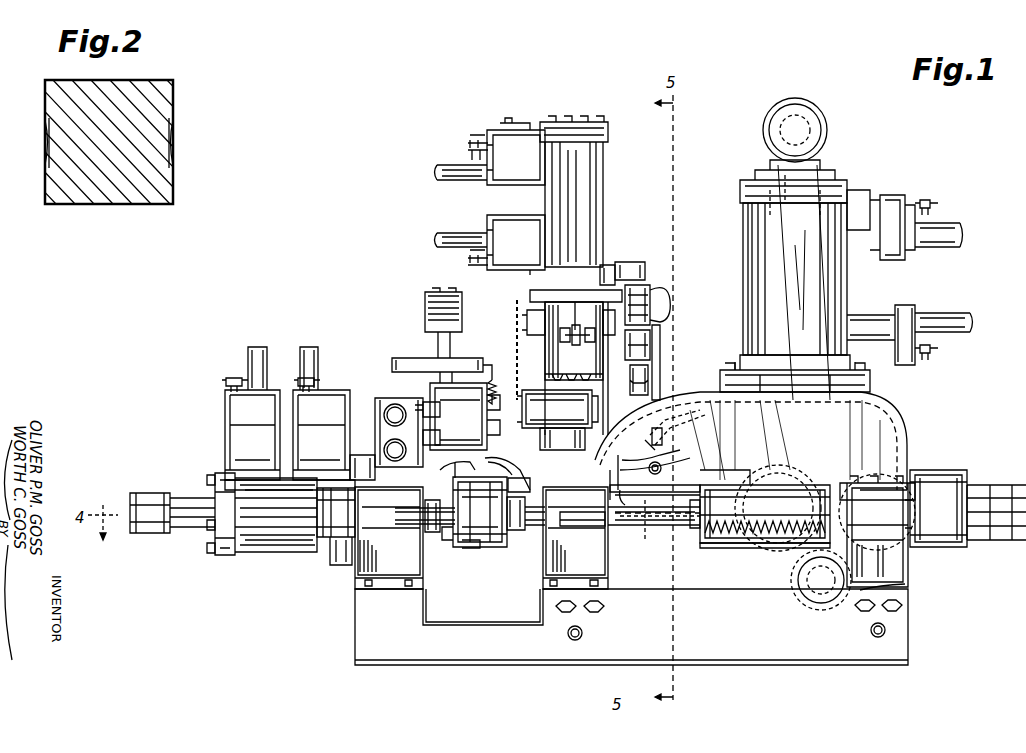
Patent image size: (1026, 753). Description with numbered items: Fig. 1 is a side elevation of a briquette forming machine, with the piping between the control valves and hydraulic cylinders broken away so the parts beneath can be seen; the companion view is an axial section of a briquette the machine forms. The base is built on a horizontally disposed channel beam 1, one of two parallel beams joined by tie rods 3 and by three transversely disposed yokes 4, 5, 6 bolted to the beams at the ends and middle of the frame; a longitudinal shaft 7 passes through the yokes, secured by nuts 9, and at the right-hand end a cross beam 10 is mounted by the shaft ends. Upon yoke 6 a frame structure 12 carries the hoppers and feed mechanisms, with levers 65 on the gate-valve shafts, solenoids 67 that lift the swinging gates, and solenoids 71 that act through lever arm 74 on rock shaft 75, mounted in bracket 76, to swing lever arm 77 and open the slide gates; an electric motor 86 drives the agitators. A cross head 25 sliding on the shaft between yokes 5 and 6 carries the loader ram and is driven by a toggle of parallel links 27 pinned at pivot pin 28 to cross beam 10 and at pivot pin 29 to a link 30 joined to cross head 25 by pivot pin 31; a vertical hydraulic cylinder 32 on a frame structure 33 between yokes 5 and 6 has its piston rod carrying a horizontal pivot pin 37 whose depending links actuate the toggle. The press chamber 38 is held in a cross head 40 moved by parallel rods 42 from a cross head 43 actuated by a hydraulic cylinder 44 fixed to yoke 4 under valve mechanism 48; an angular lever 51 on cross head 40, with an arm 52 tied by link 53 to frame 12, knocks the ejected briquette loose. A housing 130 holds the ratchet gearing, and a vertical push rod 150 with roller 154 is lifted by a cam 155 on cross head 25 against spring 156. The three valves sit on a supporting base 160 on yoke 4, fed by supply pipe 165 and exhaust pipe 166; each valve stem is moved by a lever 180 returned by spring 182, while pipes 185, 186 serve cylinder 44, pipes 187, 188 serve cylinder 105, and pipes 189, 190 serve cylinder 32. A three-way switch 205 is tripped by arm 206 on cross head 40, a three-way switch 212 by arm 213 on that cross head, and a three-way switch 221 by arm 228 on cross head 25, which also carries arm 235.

The channel beam 1 is at (372, 624).
The tie rods 3 is at (575, 641).
The yoke 4 is at (358, 556).
The yoke 5 is at (892, 552).
The yoke 6 is at (560, 574).
The shaft 7 is at (618, 530).
The nuts 9 is at (332, 520).
The cross beam 10 is at (958, 470).
The frame structure 12 is at (558, 354).
The cross head 25 is at (722, 543).
The links 27 is at (908, 586).
The pivot pin 28 is at (925, 513).
The pivot pin 29 is at (805, 608).
The link 30 is at (775, 548).
The pivot pin 31 is at (750, 540).
The hydraulic cylinder 32 is at (748, 233).
The frame structure 33 is at (875, 412).
The horizontal pivot pin 37 is at (810, 128).
The press chamber 38 is at (810, 273).
The cross head 40 is at (472, 548).
The parallel rods 42 is at (290, 512).
The cross head 43 is at (156, 496).
The hydraulic cylinder 44 is at (268, 542).
The valve mechanism 48 is at (465, 416).
The angular lever 51 is at (425, 300).
The arm 52 is at (480, 468).
The link 53 is at (500, 462).
The levers 65 is at (645, 388).
The solenoids 67 is at (652, 346).
The solenoids 71 is at (665, 297).
The lever arm 74 is at (630, 262).
The rock shaft 75 is at (598, 246).
The bracket 76 is at (645, 275).
The lever arm 77 is at (538, 297).
The electric motor 86 is at (557, 420).
The cylinder 105 is at (600, 163).
The housing 130 is at (663, 313).
The vertical push rod 150 is at (662, 368).
The roller 154 is at (672, 455).
The cam 155 is at (655, 483).
The spring 156 is at (690, 414).
The supporting base 160 is at (360, 455).
The supply pipe 165 is at (425, 402).
The exhaust pipe 166 is at (385, 405).
The lever 180 is at (415, 358).
The spring 182 is at (493, 368).
The pipe 185 is at (246, 360).
The pipe 186 is at (300, 352).
The pipe 187 is at (448, 165).
The pipe 188 is at (452, 235).
The pipe 189 is at (950, 310).
The pipe 190 is at (948, 225).
The three-way switch 205 is at (425, 510).
The arm 206 is at (432, 530).
The three-way switch 212 is at (538, 528).
The arm 213 is at (515, 532).
The three-way switch 221 is at (596, 528).
The arm 228 is at (690, 528).
The arm 235 is at (650, 540).